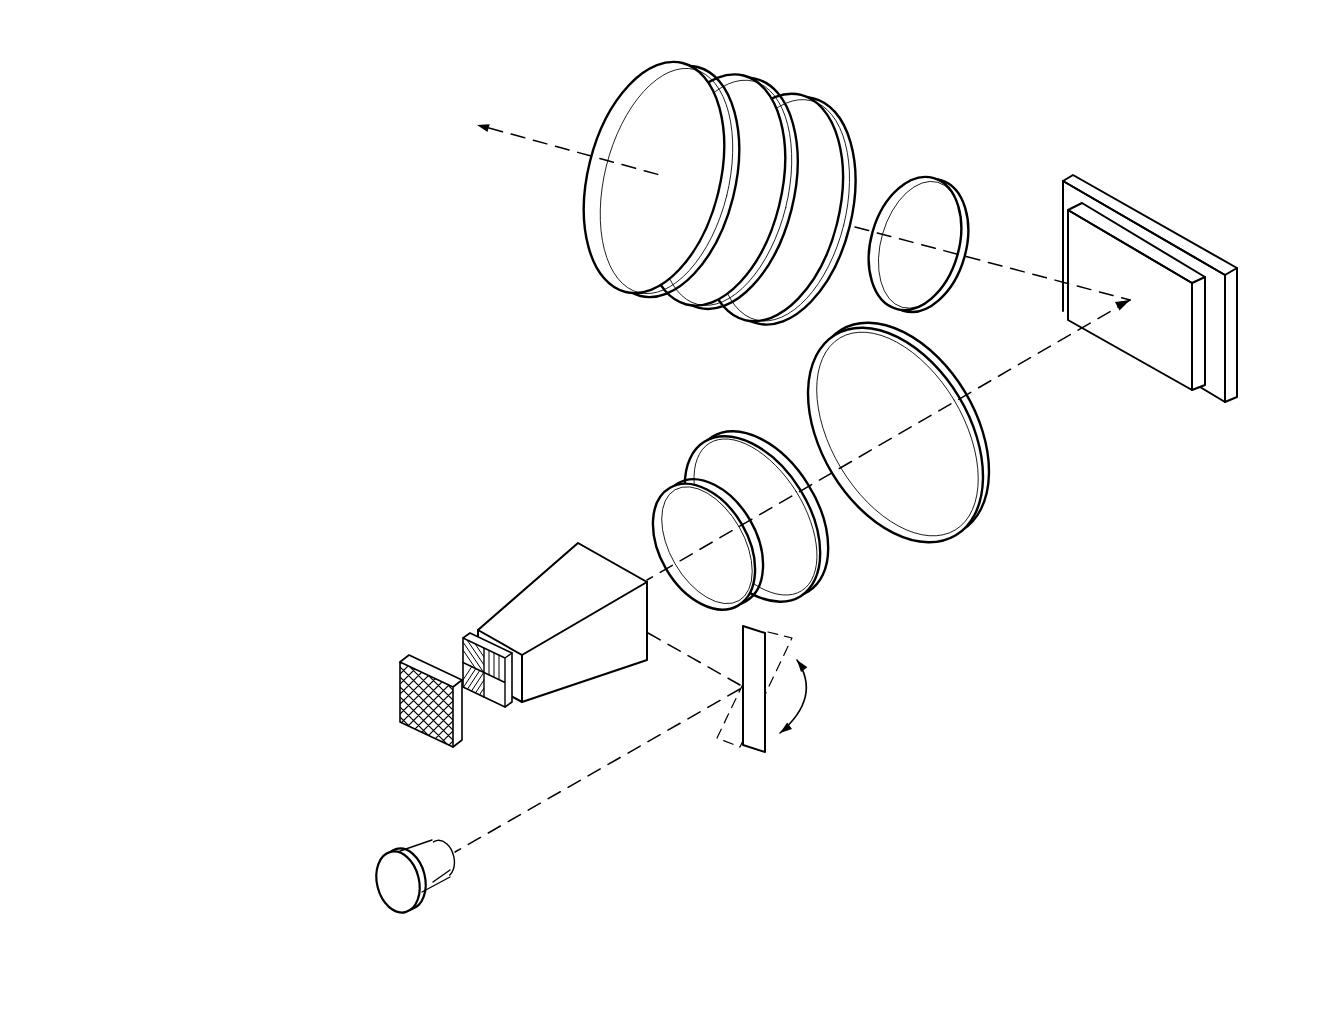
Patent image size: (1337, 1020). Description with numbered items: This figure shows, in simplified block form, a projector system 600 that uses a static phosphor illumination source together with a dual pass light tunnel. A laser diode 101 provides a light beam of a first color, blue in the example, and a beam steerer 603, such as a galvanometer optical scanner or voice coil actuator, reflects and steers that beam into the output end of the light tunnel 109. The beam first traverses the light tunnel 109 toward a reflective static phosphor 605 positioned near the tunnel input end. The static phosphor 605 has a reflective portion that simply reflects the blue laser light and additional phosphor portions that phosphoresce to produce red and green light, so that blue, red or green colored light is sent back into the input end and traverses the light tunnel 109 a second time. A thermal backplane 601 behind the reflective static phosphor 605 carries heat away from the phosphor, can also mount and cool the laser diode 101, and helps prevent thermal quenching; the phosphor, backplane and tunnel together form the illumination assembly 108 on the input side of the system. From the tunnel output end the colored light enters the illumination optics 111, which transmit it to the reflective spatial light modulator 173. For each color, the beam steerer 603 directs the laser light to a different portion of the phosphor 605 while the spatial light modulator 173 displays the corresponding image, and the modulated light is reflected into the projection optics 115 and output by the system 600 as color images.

The projector system 600 is at (242, 228).
The projection optics 115 is at (612, 20).
The reflective spatial light modulator 173 is at (1240, 333).
The illumination optics 111 is at (1077, 528).
The illumination module 108 is at (491, 488).
The light tunnel 109 is at (528, 583).
The thermal backplane 601 is at (391, 650).
The reflective static phosphor 605 is at (504, 724).
The beam steerer 603 is at (767, 742).
The laser diode 101 is at (380, 897).